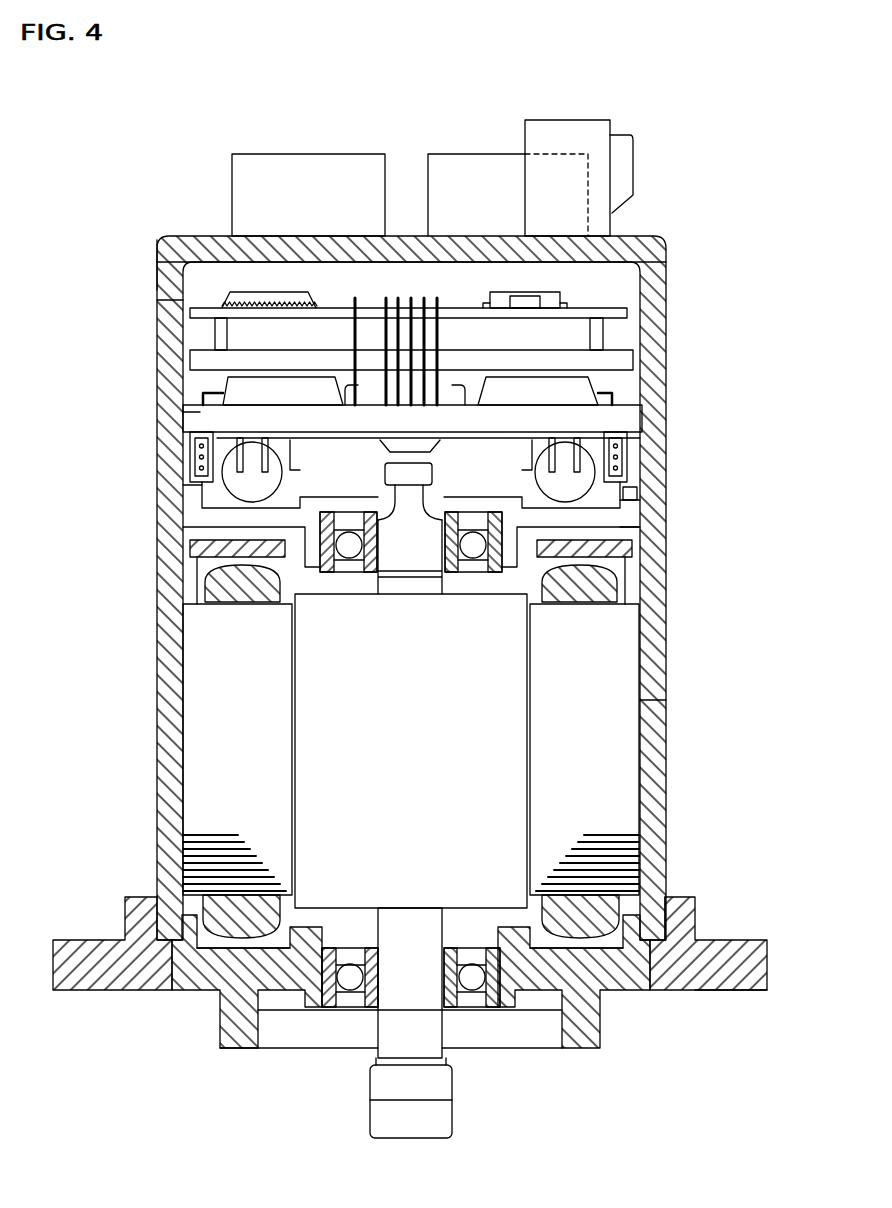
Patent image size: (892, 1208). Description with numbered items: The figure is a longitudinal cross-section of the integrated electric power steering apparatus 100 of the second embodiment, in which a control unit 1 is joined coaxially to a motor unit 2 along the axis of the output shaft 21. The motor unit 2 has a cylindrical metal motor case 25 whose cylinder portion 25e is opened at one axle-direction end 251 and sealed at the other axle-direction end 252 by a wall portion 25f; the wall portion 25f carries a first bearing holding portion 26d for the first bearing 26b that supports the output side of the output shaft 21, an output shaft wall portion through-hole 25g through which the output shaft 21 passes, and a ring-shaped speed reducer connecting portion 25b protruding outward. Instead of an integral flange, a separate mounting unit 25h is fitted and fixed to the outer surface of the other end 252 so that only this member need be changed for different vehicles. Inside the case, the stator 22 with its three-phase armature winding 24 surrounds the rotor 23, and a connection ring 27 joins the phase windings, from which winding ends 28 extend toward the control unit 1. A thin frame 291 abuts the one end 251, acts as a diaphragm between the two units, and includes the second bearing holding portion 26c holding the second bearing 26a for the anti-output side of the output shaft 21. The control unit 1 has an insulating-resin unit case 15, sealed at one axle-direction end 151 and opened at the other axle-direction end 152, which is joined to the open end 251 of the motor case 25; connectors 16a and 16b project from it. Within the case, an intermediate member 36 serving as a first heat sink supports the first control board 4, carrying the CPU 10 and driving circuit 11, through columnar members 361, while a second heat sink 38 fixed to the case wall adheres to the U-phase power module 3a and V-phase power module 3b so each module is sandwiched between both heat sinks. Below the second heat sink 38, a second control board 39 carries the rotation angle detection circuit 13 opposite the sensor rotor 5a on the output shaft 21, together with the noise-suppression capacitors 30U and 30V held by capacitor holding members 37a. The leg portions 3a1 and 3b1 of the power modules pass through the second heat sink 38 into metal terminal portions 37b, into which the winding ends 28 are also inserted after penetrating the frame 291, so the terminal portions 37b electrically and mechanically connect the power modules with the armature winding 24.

The integrated electric power steering apparatus 100 is at (740, 122).
The motor unit 2 is at (668, 845).
The CPU 10 is at (165, 250).
The unit case 15 is at (160, 280).
The one axle-direction end 151 is at (178, 238).
The other axle-direction end 152 is at (637, 492).
The connector 16a is at (620, 135).
The connector 16b is at (330, 154).
The control unit 1 is at (628, 312).
The driving circuit 11 is at (590, 264).
The first control board 4 is at (645, 275).
The columnar member 361 is at (215, 335).
The intermediate member 36 is at (635, 358).
The second heat sink 38 is at (642, 412).
The second control board 39 is at (185, 413).
The U-phase power module 3a is at (225, 388).
The leg portion 3a1 is at (205, 398).
The V-phase power module 3b is at (595, 390).
The leg portion 3b1 is at (610, 398).
The terminal portion 37b is at (192, 455).
The capacitor holding member 37a is at (627, 468).
The noise-suppression capacitor 30U is at (230, 483).
The noise-suppression capacitor 30V is at (540, 478).
The winding end 28 is at (190, 530).
The connection ring 27 is at (200, 548).
The one axle-direction end 251 is at (642, 506).
The frame 291 is at (655, 525).
The second bearing 26a is at (322, 565).
The second bearing holding portion 26c is at (502, 548).
The first bearing holding portion 26d is at (320, 995).
The first bearing 26b is at (360, 1000).
The rotor 23 is at (298, 718).
The armature winding 24 is at (666, 640).
The cylinder portion 25e is at (642, 725).
The stator 22 is at (612, 800).
The rotor of rotation sensor 5a is at (436, 462).
The rotation angle detection circuit 13 is at (410, 445).
The output shaft 21 is at (452, 1060).
The motor case 25 is at (160, 862).
The other axle-direction end 252 is at (668, 885).
The output shaft wall portion through-hole 25g is at (215, 985).
The speed reducer connecting portion 25b is at (222, 1040).
The wall portion 25f is at (617, 987).
The mounting unit 25h is at (695, 990).